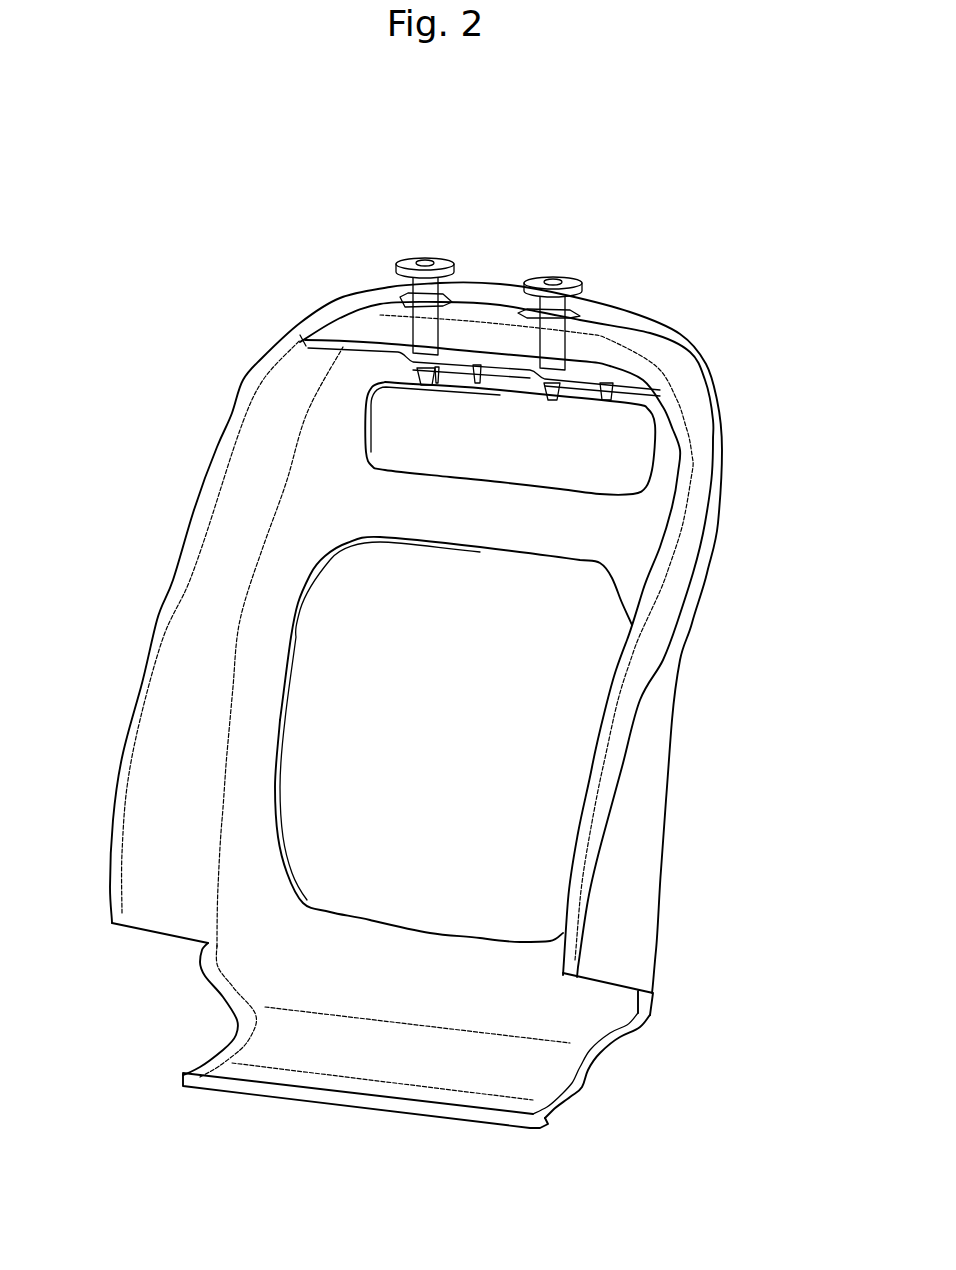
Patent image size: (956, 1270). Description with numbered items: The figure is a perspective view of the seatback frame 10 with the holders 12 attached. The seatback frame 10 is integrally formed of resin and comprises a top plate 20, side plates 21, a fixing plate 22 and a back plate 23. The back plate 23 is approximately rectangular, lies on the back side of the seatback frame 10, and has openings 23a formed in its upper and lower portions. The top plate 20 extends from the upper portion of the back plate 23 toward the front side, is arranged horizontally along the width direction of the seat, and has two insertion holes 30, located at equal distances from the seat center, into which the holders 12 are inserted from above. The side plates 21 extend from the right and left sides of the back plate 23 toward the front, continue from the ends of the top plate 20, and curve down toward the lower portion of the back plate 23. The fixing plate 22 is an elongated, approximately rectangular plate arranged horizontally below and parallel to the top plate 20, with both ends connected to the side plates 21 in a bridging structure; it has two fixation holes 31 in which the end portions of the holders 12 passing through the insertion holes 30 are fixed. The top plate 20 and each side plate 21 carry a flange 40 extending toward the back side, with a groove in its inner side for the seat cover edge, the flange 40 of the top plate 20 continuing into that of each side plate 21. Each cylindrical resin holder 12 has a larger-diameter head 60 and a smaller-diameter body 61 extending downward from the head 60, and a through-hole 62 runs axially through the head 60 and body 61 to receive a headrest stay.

The seatback frame 10 is at (523, 188).
The holder 12 is at (432, 244).
The top plate 20 is at (477, 303).
The side plate 21 is at (138, 692).
The fixing plate 22 is at (607, 368).
The back plate 23 is at (592, 528).
The opening 23a is at (627, 460).
The insertion hole 30 is at (452, 293).
The fixation hole 31 is at (427, 347).
The flange 40 is at (505, 300).
The head 60 is at (406, 257).
The body 61 is at (417, 333).
The through-hole 62 is at (430, 258).